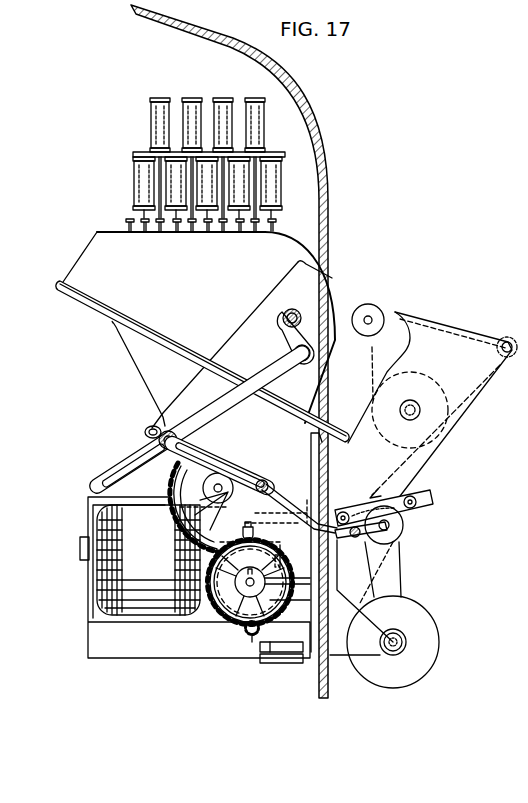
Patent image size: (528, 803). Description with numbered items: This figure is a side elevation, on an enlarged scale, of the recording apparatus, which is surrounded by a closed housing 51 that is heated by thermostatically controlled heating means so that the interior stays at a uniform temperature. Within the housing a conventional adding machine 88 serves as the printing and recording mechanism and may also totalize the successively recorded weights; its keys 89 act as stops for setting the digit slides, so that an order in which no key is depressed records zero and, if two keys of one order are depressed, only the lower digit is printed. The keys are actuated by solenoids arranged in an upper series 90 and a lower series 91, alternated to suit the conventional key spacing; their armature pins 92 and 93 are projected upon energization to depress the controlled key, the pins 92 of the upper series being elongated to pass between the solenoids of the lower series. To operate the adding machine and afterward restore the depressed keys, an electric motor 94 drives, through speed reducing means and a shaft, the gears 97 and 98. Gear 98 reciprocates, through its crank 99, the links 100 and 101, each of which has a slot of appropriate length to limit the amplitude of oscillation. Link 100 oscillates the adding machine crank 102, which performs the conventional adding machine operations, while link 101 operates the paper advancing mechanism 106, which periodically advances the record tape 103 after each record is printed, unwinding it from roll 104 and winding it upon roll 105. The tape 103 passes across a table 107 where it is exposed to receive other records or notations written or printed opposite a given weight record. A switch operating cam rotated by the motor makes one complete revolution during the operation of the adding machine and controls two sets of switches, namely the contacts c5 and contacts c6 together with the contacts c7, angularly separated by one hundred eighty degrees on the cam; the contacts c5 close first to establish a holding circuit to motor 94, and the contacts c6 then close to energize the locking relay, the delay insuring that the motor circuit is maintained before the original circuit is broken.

The closed housing 51 is at (326, 126).
The adding machine 88 is at (93, 258).
The keys 89 is at (125, 227).
The upper series solenoids 90 is at (152, 112).
The lower series solenoids 91 is at (140, 191).
The armature pins 92 is at (160, 173).
The armature pins 93 is at (136, 213).
The electric motor 94 is at (84, 552).
The gear 97 is at (218, 623).
The gear 98 is at (176, 485).
The crank 99 is at (153, 455).
The link 100 is at (226, 398).
The link 101 is at (277, 490).
The adding machine crank 102 is at (300, 332).
The record tape 103 is at (393, 312).
The roll 104 is at (422, 388).
The roll 105 is at (427, 623).
The paper advancing mechanism 106 is at (393, 520).
The table 107 is at (437, 322).
The contacts C-5 c5 is at (262, 648).
The contacts C-6 c6 is at (262, 662).
The contacts C-7 c7 is at (255, 513).